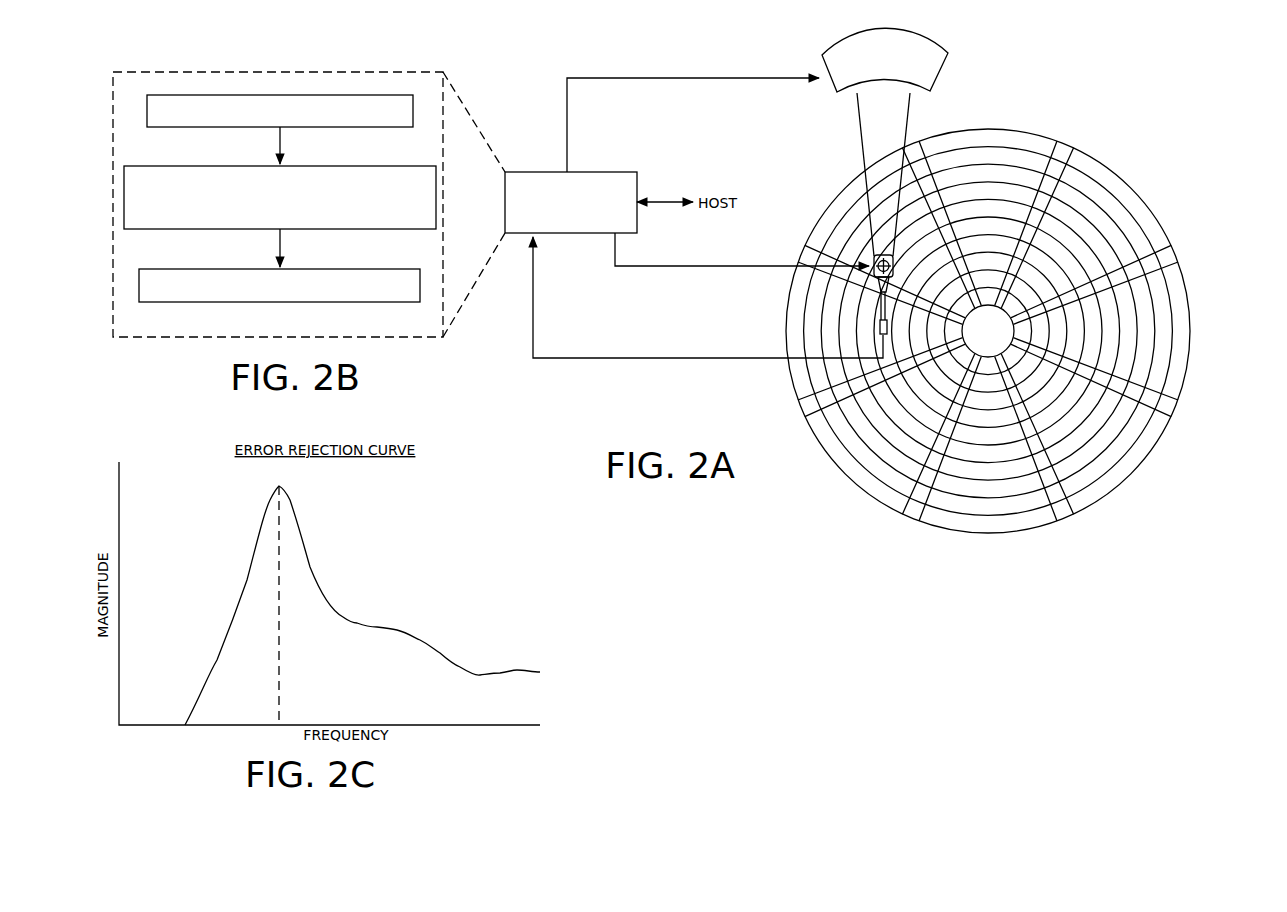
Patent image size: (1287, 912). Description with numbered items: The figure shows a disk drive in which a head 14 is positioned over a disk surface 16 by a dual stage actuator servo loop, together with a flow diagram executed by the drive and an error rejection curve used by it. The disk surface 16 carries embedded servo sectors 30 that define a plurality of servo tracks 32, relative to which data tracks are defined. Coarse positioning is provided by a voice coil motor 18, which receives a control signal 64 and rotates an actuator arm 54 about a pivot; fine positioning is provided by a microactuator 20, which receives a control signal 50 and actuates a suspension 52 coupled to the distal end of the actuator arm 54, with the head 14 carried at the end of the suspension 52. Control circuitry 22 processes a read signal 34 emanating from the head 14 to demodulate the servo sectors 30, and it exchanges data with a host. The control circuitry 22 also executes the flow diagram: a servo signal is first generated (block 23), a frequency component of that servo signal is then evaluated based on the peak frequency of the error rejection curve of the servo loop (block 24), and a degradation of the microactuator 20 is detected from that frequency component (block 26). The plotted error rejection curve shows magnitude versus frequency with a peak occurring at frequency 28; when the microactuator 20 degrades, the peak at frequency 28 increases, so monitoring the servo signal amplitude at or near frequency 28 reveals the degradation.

In FIG. 2A, the head 14 is at (877, 326).
In FIG. 2A, the disk surface 16 is at (1132, 176).
In FIG. 2A, the voice coil motor 18 is at (830, 93).
In FIG. 2A, the microactuator 20 is at (896, 262).
In FIG. 2A, the control circuitry 22 is at (604, 172).
In FIG. 2B, the block for generating a servo signal 23 is at (370, 127).
In FIG. 2B, the block for evaluating a frequency component of the servo signal 24 is at (393, 229).
In FIG. 2B, the block for detecting degradation of the microactuator 26 is at (388, 302).
In FIG. 2C, the peak frequency 28 is at (279, 667).
In FIG. 2A, the servo sectors 30 is at (1068, 148).
In FIG. 2A, the servo tracks 32 is at (990, 160).
In FIG. 2A, the read signal 34 is at (663, 358).
In FIG. 2A, the control signal 50 is at (712, 266).
In FIG. 2A, the suspension 52 is at (891, 306).
In FIG. 2A, the actuator arm 54 is at (867, 158).
In FIG. 2A, the control signal 64 is at (567, 128).